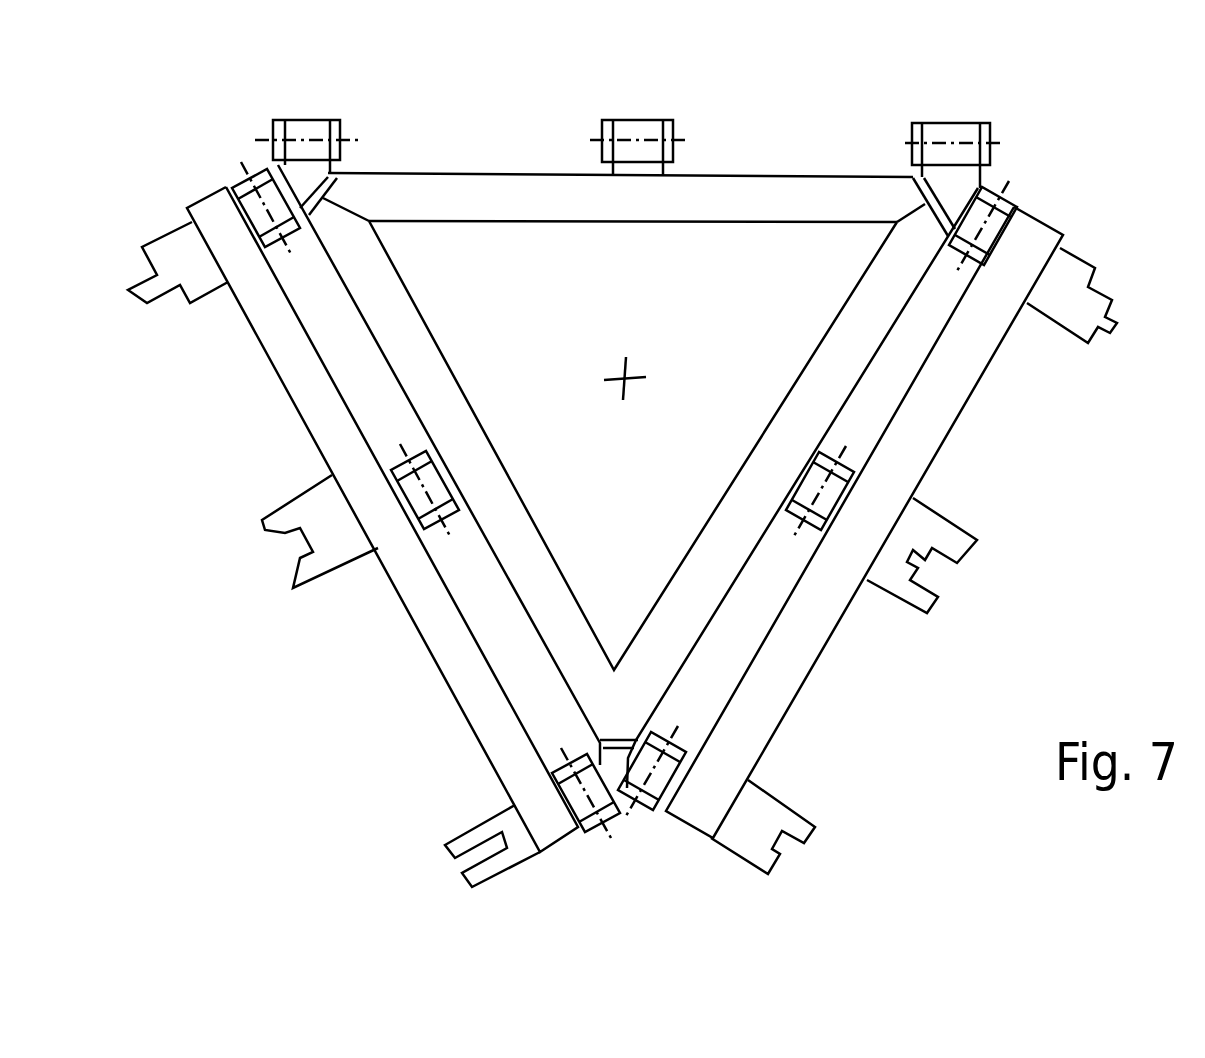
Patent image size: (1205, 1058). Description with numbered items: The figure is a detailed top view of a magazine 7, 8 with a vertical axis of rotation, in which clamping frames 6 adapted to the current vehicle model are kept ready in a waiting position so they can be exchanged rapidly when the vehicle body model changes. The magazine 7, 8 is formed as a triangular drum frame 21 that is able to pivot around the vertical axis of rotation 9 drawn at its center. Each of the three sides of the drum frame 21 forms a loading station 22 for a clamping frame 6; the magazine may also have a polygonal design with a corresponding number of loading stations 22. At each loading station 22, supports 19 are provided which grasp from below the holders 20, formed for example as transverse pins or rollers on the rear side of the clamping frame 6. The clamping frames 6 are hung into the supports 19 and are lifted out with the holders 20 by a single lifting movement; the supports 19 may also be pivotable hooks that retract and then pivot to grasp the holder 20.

The clamping frame 6 is at (622, 537).
The magazine 7 is at (353, 537).
The magazine 8 is at (353, 537).
The vertical axis of rotation 9 is at (640, 356).
The support 19 is at (639, 436).
The holder 20 is at (805, 487).
The drum frame 21 is at (745, 490).
The loading station 22 is at (547, 396).